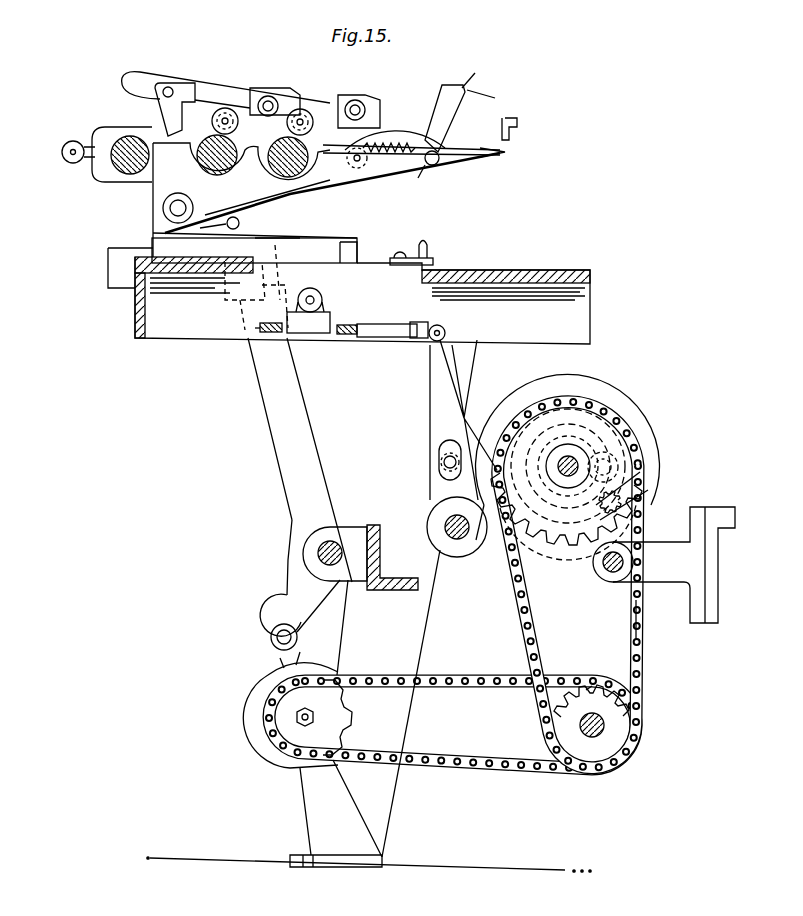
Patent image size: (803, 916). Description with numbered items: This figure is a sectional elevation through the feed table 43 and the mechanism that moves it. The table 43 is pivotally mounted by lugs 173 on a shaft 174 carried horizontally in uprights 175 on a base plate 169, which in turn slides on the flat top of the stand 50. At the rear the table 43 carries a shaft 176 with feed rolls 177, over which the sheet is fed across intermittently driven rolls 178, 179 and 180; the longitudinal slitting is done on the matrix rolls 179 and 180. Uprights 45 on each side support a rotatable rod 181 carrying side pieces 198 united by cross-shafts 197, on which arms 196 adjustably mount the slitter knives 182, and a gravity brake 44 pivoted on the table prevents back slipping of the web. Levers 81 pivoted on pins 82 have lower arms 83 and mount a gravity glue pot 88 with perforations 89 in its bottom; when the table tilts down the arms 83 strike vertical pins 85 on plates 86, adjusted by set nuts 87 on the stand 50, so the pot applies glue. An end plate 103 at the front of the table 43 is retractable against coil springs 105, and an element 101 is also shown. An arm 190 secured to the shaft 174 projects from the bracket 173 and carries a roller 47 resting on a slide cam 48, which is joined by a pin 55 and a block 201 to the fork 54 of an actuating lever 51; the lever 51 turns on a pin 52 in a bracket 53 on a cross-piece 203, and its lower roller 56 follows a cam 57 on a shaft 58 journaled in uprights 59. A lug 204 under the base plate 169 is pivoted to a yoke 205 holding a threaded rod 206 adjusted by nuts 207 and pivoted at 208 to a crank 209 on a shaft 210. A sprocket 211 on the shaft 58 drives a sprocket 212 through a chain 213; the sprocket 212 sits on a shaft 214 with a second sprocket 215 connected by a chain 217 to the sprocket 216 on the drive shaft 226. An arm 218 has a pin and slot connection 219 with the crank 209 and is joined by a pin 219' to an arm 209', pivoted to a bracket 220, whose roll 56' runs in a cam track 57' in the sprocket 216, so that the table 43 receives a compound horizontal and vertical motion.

The feed table 43 is at (340, 148).
The gravity brake 44 is at (393, 128).
The uprights 45 is at (160, 108).
The roller 47 is at (245, 222).
The slide cam 48 is at (240, 227).
The stand 50 is at (575, 270).
The actuating lever 51 is at (300, 417).
The pin 52 is at (300, 553).
The bracket 53 is at (335, 532).
The fork 54 is at (272, 235).
The pin 55 is at (246, 306).
The roller 56 is at (267, 631).
The roll 56' is at (596, 583).
The cam 57 is at (280, 715).
The cam track 57' is at (568, 446).
The shaft 58 is at (303, 718).
The uprights 59 is at (310, 803).
The glue finger 81 is at (445, 87).
The pivot pins 82 is at (432, 165).
The projection 83 is at (432, 168).
The vertical pin 85 is at (437, 258).
The plate 86 is at (423, 243).
The set nut 87 is at (400, 252).
The glue pot 88 is at (470, 80).
The perforations 89 is at (490, 96).
The stop bracket 101 is at (503, 128).
The end plate 103 is at (500, 153).
The coil springs 105 is at (372, 160).
The base plate 169 is at (348, 240).
The lugs 173 is at (163, 187).
The shaft 174 is at (160, 225).
The uprights 175 is at (210, 235).
The shaft 176 is at (73, 141).
The feed rolls 177 is at (73, 160).
The roll 178 is at (127, 167).
The matrix roll 179 is at (200, 142).
The matrix roll 180 is at (283, 165).
The rod 181 is at (168, 87).
The slitter knives 182 is at (224, 107).
The arm 190 is at (210, 218).
The arms 196 is at (254, 100).
The cross-shafts 197 is at (268, 96).
The side pieces 198 is at (202, 92).
The block 201 is at (288, 253).
The cross-piece 203 is at (377, 557).
The lug 204 is at (325, 283).
The yoke 205 is at (312, 333).
The threaded rod 206 is at (377, 330).
The nuts 207 is at (282, 336).
The pivot 208 is at (445, 327).
The crank 209 is at (446, 420).
The arm 209' is at (651, 496).
The shaft 210 is at (460, 537).
The sprocket 211 is at (330, 712).
The second sprocket 212 is at (580, 687).
The chain 213 is at (500, 762).
The shaft 214 is at (592, 740).
The second sprocket 215 is at (583, 695).
The sprocket 216 is at (590, 552).
The chain 217 is at (635, 608).
The arm 218 is at (560, 458).
The pin and slot connection 219 is at (426, 460).
The pin 219' is at (649, 465).
The bracket 220 is at (655, 545).
The drive shaft 226 is at (563, 460).